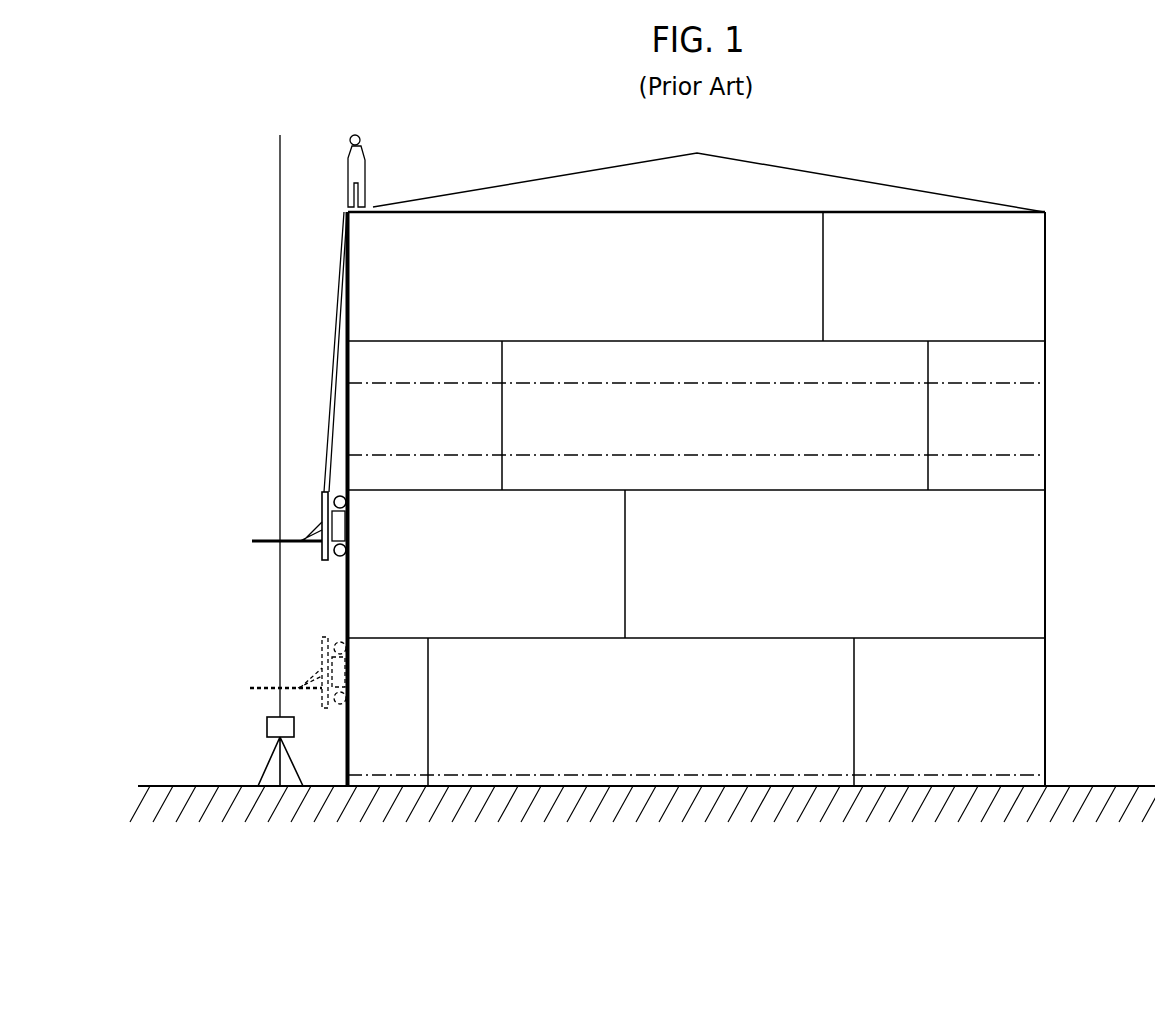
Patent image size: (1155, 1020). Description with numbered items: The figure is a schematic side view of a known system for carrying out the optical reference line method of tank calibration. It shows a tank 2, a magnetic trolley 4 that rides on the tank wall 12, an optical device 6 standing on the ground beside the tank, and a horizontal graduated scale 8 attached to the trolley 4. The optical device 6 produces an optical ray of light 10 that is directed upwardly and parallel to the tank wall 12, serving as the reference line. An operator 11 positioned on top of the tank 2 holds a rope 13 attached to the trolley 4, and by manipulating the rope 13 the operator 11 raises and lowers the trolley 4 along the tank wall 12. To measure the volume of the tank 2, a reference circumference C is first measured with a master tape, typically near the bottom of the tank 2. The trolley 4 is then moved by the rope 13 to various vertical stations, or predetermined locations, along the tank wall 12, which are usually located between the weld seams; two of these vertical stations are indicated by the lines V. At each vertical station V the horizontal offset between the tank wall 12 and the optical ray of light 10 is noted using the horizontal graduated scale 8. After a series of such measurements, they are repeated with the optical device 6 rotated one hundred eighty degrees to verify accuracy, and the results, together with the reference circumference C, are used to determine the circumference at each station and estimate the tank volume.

The tank 2 is at (1046, 265).
The magnetic trolley 4 is at (322, 512).
The optical device 6 is at (232, 753).
The horizontal graduated scale 8 is at (262, 545).
The optical ray of light 10 is at (280, 233).
The operator 11 is at (372, 165).
The tank wall 12 is at (352, 288).
The rope 13 is at (330, 390).
The vertical stations V is at (636, 383).
The reference circumference C is at (917, 775).